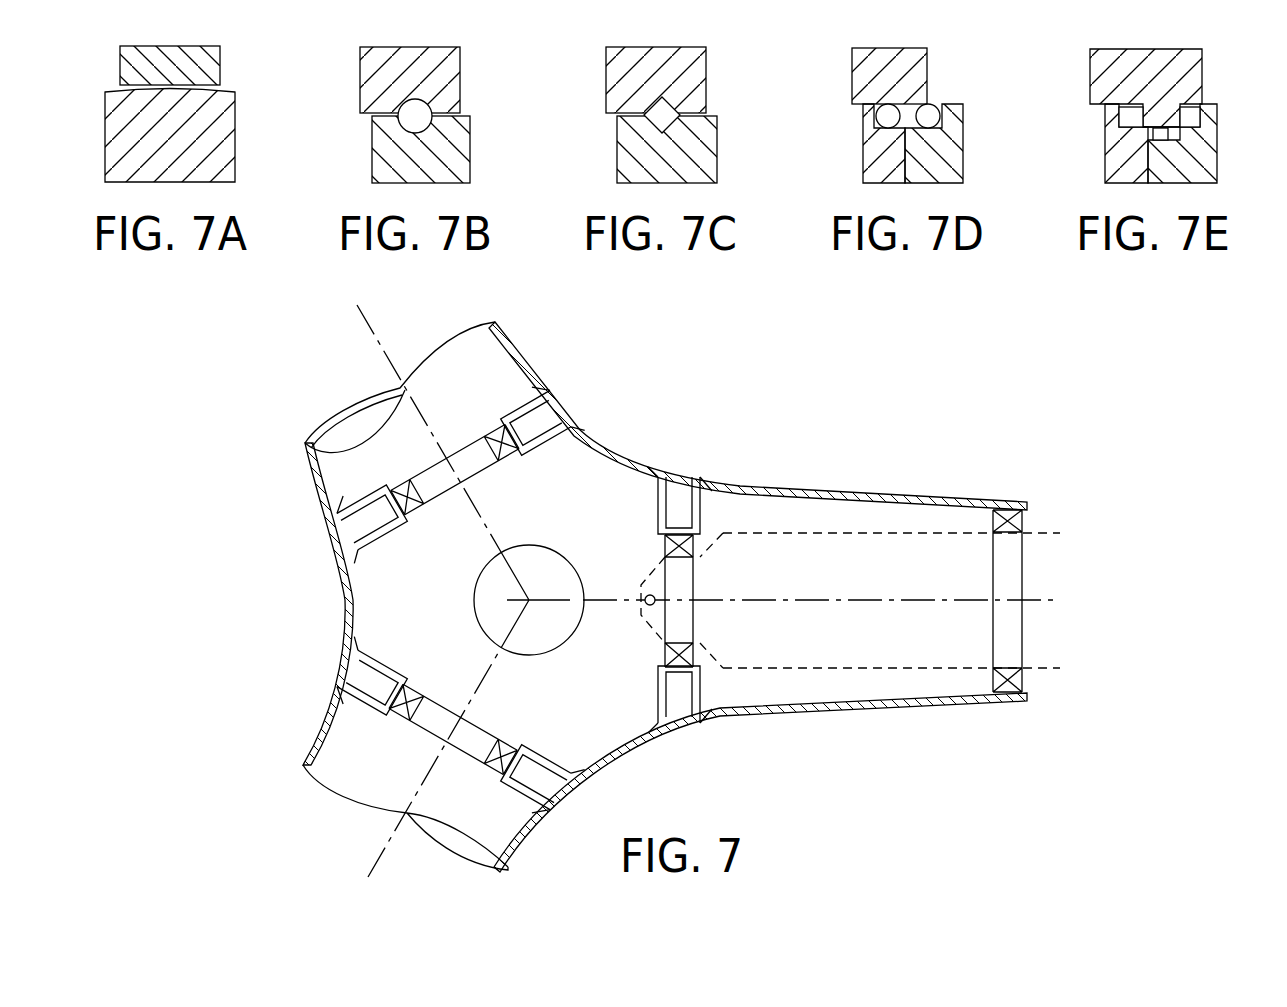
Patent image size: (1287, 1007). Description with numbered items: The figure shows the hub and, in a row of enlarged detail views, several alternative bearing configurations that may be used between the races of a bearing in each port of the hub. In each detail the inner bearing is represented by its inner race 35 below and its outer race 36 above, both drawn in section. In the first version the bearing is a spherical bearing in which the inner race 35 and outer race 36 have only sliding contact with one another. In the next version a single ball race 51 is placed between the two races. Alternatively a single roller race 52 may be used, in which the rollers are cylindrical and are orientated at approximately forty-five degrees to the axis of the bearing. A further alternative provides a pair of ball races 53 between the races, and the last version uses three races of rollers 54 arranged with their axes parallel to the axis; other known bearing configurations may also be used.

In FIG. 7A, the inner race 35 is at (105, 140).
In FIG. 7A, the outer race 36 is at (120, 76).
In FIG. 7B, the single ball race 51 is at (430, 106).
In FIG. 7C, the single roller race 52 is at (676, 108).
In FIG. 7D, the pair of ball races 53 is at (878, 117).
In FIG. 7E, the three races of rollers 54 is at (1130, 118).